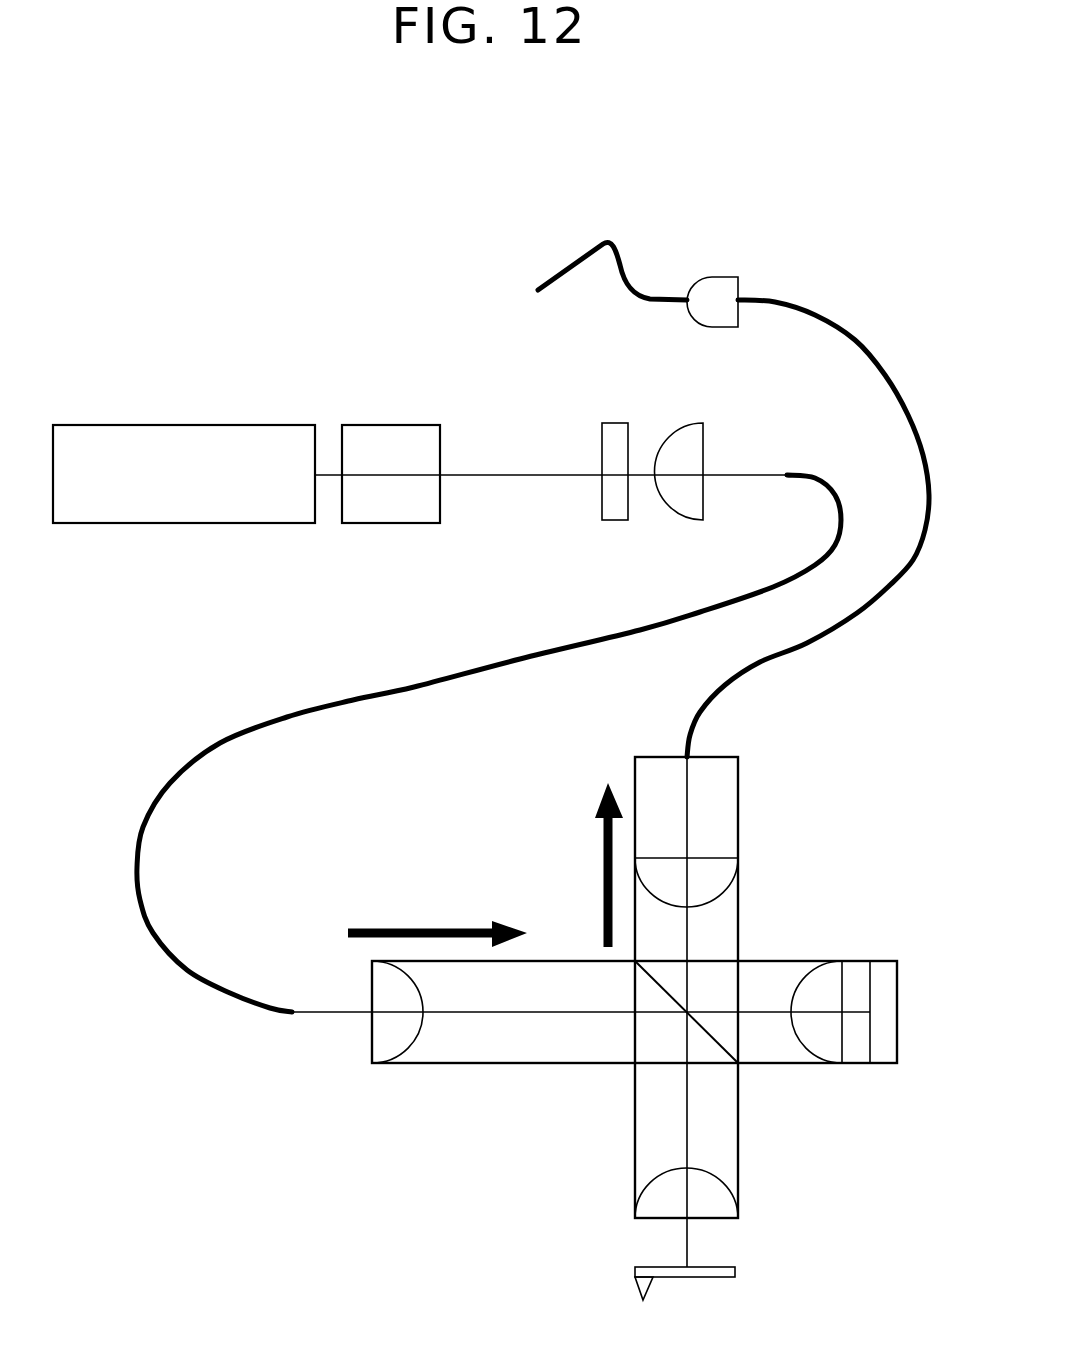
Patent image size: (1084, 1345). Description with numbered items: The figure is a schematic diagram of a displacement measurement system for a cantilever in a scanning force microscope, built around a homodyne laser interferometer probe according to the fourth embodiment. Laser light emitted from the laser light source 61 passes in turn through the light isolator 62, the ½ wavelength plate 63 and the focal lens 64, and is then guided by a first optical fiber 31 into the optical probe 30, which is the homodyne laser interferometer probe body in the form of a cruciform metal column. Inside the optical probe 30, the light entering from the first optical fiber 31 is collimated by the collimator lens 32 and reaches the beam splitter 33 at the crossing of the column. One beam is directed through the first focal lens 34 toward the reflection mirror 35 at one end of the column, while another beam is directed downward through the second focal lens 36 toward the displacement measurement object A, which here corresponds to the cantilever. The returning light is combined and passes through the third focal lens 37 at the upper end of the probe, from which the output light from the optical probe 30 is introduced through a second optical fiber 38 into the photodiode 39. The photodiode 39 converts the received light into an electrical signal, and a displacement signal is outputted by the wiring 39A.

The optical probe 30 is at (560, 958).
The first optical fiber 31 is at (414, 687).
The collimator lens 32 is at (386, 1048).
The beam splitter 33 is at (722, 973).
The first focal lens 34 is at (830, 1050).
The reflection mirror 35 is at (882, 1050).
The second focal lens 36 is at (647, 1207).
The third focal lens 37 is at (722, 870).
The second optical fiber 38 is at (805, 650).
The photodiode 39 is at (718, 277).
The wiring 39A is at (666, 298).
The laser light source 61 is at (278, 425).
The light isolator 62 is at (423, 425).
The ½ wavelength plate 63 is at (615, 420).
The focal lens 64 is at (692, 423).
The displacement measurement object A is at (635, 1270).